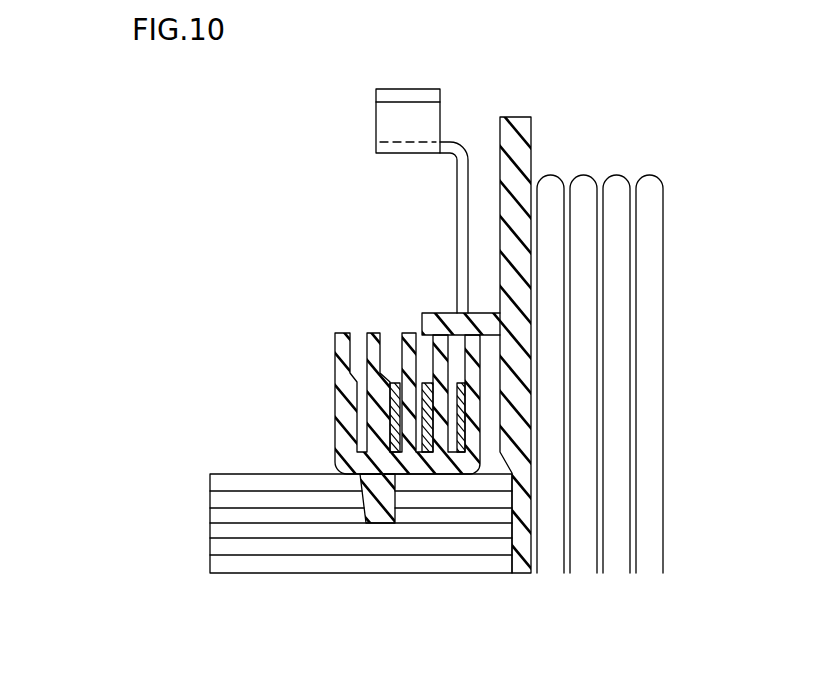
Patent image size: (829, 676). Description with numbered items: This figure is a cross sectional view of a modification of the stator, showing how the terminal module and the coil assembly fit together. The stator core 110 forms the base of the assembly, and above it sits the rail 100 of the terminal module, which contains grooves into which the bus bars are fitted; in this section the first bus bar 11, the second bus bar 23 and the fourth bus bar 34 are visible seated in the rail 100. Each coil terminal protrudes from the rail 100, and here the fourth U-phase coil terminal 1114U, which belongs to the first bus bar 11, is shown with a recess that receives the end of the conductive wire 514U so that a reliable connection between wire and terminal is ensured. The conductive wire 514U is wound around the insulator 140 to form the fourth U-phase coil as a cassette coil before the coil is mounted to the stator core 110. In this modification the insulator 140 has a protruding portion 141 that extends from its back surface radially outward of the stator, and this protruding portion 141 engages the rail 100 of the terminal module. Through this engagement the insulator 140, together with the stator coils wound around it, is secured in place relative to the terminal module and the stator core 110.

The fourth U-phase coil terminal 1114U is at (406, 120).
The insulator 140 is at (515, 150).
The protruding portion 141 is at (435, 325).
The conductive wire 514U is at (648, 363).
The rail 100 is at (347, 422).
The stator core 110 is at (287, 540).
The fourth bus bar 34 is at (394, 458).
The second bus bar 23 is at (428, 455).
The first bus bar 11 is at (460, 445).